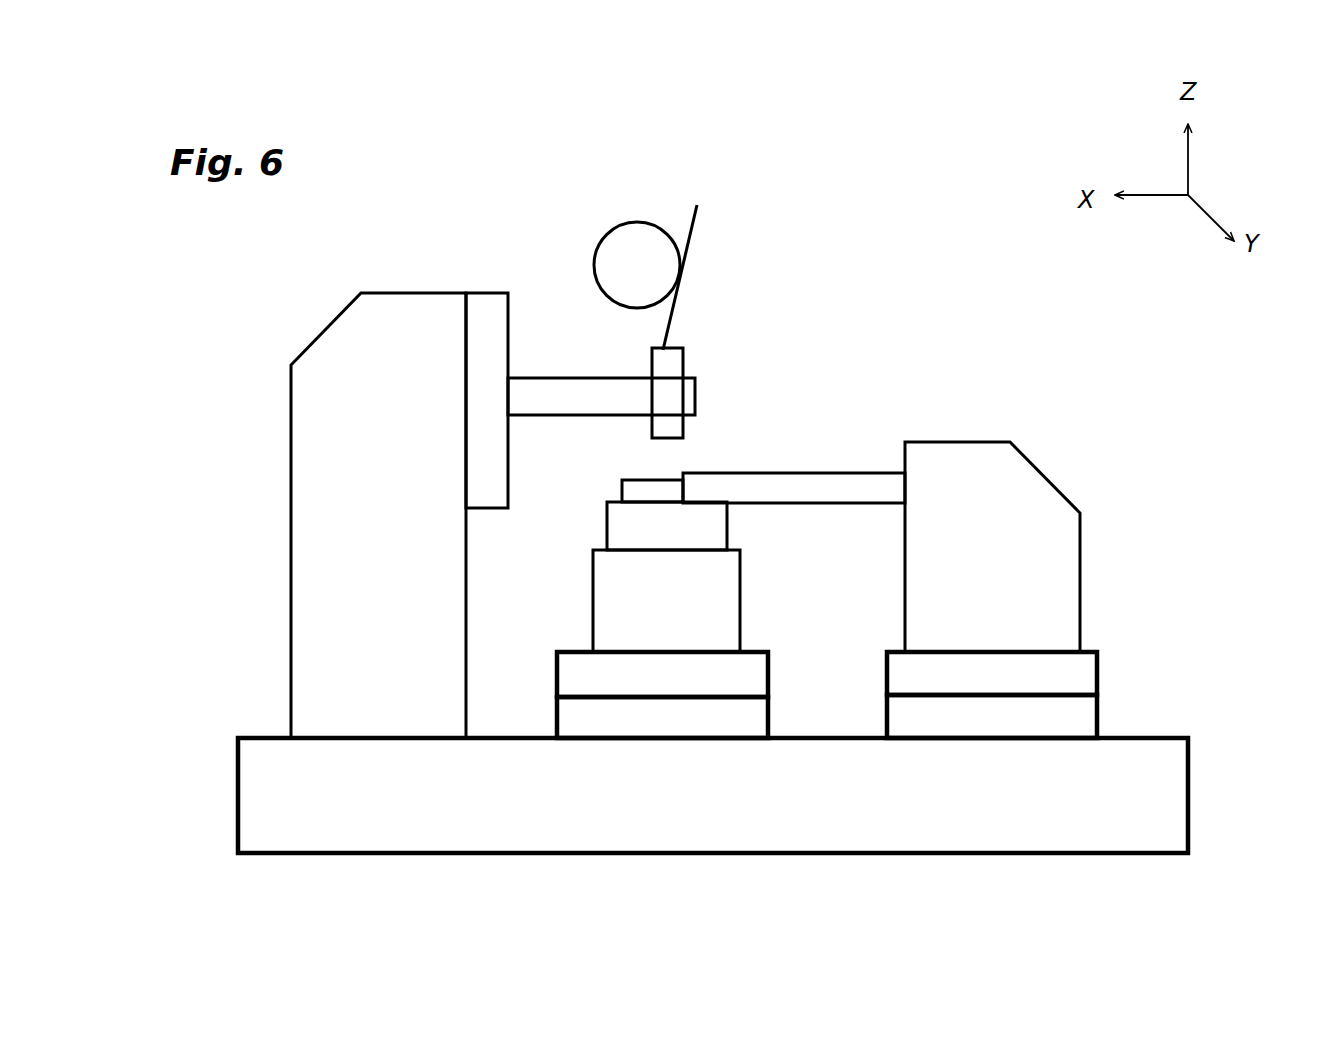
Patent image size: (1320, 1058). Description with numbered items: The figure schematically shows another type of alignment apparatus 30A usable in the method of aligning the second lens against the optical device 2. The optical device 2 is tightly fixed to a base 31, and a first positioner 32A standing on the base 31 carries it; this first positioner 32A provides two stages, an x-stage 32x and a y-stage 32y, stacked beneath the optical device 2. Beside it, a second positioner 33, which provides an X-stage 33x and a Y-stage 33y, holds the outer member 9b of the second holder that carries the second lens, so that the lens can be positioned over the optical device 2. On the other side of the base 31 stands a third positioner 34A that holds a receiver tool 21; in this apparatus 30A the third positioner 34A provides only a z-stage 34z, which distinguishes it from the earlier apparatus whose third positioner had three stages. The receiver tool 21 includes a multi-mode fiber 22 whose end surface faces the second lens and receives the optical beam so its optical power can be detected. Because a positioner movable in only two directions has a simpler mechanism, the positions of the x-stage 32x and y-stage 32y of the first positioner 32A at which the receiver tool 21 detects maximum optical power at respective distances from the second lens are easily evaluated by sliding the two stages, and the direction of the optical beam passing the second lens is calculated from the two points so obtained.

The apparatus 30A is at (856, 224).
The base 31 is at (1190, 797).
The third positioner 34A is at (273, 505).
The Z-stage 34z is at (490, 285).
The receiver tool 21 is at (685, 363).
The multi-mode fiber 22 is at (695, 237).
The first positioner 32A is at (585, 590).
The x-stage 32x is at (745, 676).
The y-stage 32y is at (745, 716).
The optical device 2 is at (718, 530).
The outer member 9b is at (620, 490).
The second positioner 33 is at (1102, 528).
The X-stage 33x is at (1085, 676).
The Y-stage 33y is at (1085, 716).